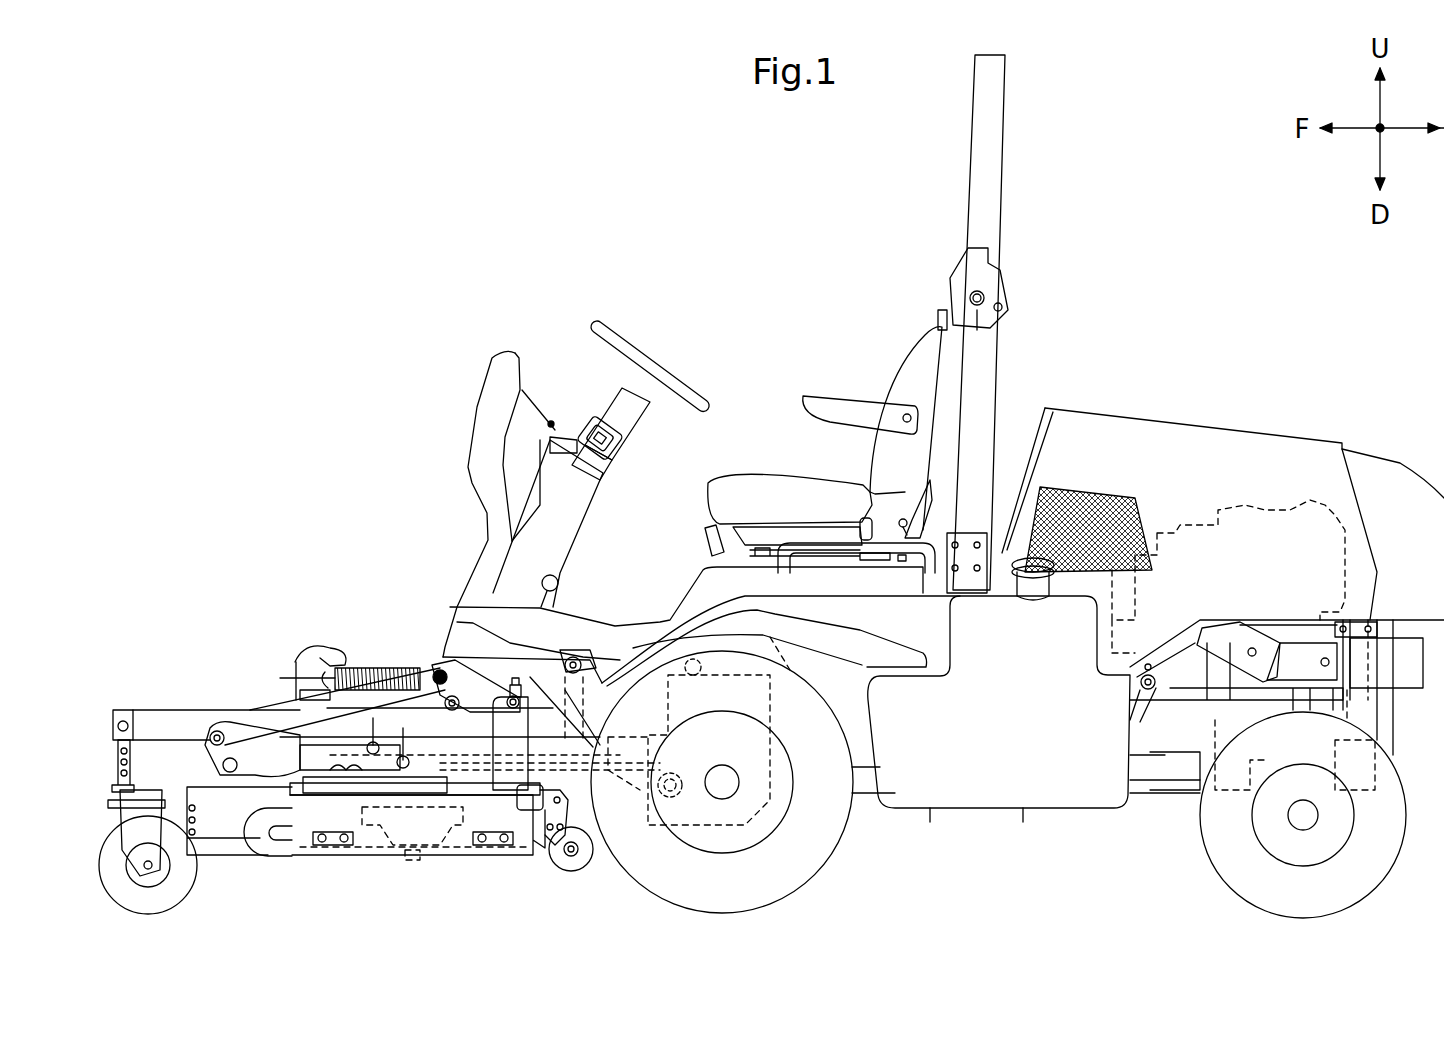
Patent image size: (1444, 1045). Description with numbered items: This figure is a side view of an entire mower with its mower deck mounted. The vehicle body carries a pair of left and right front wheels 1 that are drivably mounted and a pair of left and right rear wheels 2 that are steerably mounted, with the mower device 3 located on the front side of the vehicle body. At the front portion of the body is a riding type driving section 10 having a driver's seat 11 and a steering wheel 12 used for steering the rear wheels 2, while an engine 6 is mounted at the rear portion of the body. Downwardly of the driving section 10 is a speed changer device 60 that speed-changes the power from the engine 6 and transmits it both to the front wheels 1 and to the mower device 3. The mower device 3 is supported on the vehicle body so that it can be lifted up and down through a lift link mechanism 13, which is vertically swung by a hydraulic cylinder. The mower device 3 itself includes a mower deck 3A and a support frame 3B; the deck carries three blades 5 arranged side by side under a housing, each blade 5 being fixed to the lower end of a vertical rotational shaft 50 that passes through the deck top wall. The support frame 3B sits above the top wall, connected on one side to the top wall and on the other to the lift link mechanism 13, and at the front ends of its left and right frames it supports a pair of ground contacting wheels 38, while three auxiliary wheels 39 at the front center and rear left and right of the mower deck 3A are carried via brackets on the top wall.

The front wheel 1 is at (805, 851).
The rear wheel 2 is at (1375, 850).
The mower device 3 is at (392, 871).
The mower deck 3A is at (490, 820).
The support frame 3B is at (196, 720).
The blade 5 is at (337, 850).
The engine 6 is at (1243, 507).
The riding type driving section 10 is at (766, 314).
The driver's seat 11 is at (783, 498).
The steering wheel 12 is at (660, 376).
The lift link mechanism 13 is at (438, 718).
The ground contacting wheel 38 is at (197, 867).
The auxiliary wheel 39 is at (572, 862).
The rotational shaft 50 is at (410, 858).
The speed changer device 60 is at (718, 830).